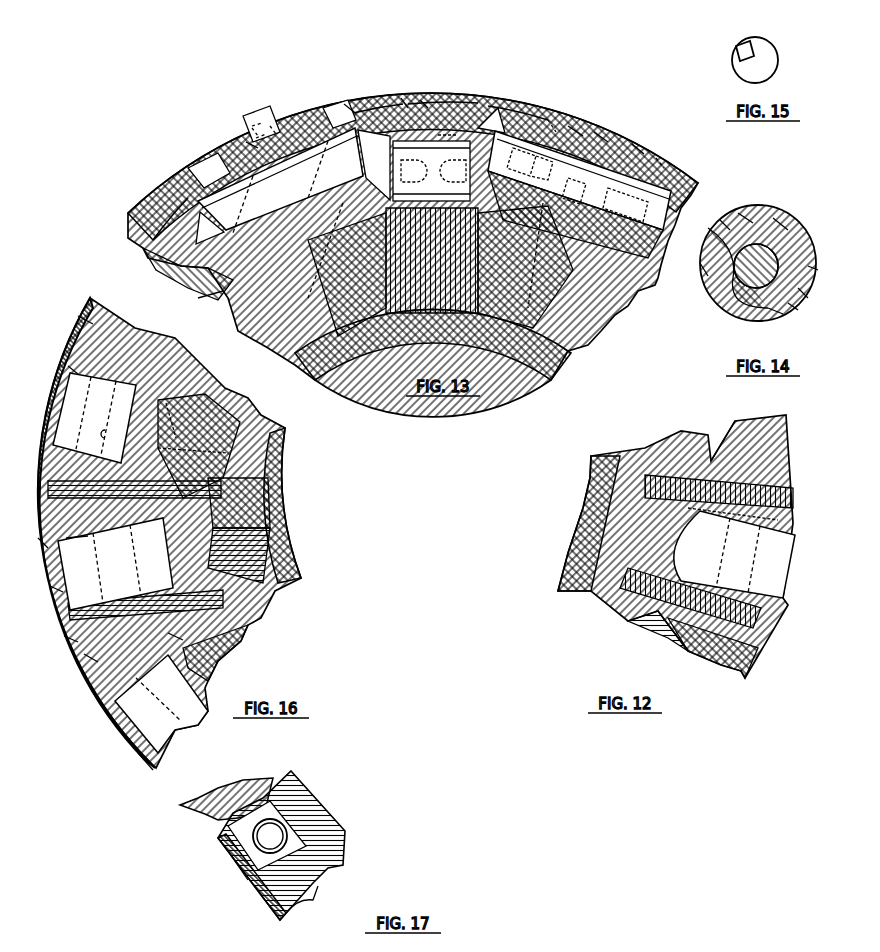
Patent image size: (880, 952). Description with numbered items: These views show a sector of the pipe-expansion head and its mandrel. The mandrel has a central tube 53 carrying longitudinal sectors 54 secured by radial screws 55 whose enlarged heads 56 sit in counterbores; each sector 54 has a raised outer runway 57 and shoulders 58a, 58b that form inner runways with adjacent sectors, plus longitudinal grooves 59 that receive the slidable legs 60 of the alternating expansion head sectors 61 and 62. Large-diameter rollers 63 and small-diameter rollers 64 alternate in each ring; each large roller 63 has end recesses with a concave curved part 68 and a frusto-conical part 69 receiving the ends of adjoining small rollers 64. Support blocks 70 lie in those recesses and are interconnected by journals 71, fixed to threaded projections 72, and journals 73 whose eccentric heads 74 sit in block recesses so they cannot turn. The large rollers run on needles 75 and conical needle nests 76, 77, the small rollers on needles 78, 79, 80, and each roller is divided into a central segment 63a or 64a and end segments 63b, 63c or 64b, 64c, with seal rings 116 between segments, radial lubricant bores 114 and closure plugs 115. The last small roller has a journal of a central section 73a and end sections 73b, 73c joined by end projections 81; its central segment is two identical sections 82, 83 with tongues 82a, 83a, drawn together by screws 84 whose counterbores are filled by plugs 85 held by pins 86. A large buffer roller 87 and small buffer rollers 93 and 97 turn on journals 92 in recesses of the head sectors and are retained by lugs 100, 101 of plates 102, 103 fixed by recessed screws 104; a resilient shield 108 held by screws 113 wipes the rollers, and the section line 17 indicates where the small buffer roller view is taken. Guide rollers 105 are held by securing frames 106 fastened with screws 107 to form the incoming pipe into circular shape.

In FIG. 16, the section line 17 is at (72, 706).
In FIG. 13, the central tube 53 is at (400, 325).
In FIG. 16, the central tube 53 is at (268, 495).
In FIG. 12, the central tube 53 is at (580, 505).
In FIG. 13, the longitudinal sector 54 is at (382, 288).
In FIG. 16, the longitudinal sector 54 is at (268, 468).
In FIG. 12, the longitudinal sector 54 is at (637, 445).
In FIG. 16, the radial screw 55 is at (220, 425).
In FIG. 13, the enlarged head 56 is at (528, 262).
In FIG. 16, the enlarged head 56 is at (180, 420).
In FIG. 16, the outer runway 57 is at (160, 448).
In FIG. 16, the shoulder 58a is at (202, 550).
In FIG. 16, the shoulder 58b is at (202, 512).
In FIG. 13, the longitudinal groove 59 is at (386, 270).
In FIG. 13, the leg 60 is at (364, 268).
In FIG. 16, the leg 60 is at (243, 612).
In FIG. 16, the expansion head sector 61 is at (60, 632).
In FIG. 12, the expansion head sector 61 is at (733, 422).
In FIG. 16, the expansion head sector 62 is at (42, 460).
In FIG. 12, the expansion head sector 62 is at (668, 620).
In FIG. 17, the expansion head sector 62 is at (314, 807).
In FIG. 13, the large-diameter roller 63 is at (468, 57).
In FIG. 13, the central segment 63a is at (458, 87).
In FIG. 13, the end segment 63b is at (505, 100).
In FIG. 13, the end segment 63c is at (368, 90).
In FIG. 13, the small-diameter roller 64 is at (254, 89).
In FIG. 17, the small-diameter roller 64 is at (258, 770).
In FIG. 13, the central segment 64a is at (245, 135).
In FIG. 13, the end segment 64b is at (322, 110).
In FIG. 13, the end segment 64c is at (205, 152).
In FIG. 13, the curved part 68 is at (340, 98).
In FIG. 13, the frusto-conical part 69 is at (398, 88).
In FIG. 13, the support block 70 is at (203, 252).
In FIG. 13, the journal 71 is at (212, 283).
In FIG. 13, the threaded projection 72 is at (410, 178).
In FIG. 13, the journal 73 is at (268, 195).
In FIG. 13, the central journal section 73a is at (564, 175).
In FIG. 14, the central journal section 73a is at (800, 230).
In FIG. 13, the end journal section 73b is at (614, 204).
In FIG. 15, the end journal section 73b is at (768, 40).
In FIG. 13, the end journal section 73c is at (500, 160).
In FIG. 13, the eccentric head 74 is at (358, 150).
In FIG. 14, the eccentric head 74 is at (724, 306).
In FIG. 13, the roller needles 75 is at (440, 131).
In FIG. 13, the frusto-conical needle nest 76 is at (478, 98).
In FIG. 13, the frusto-conical needle nest 77 is at (418, 90).
In FIG. 13, the roller needles 78 is at (302, 145).
In FIG. 13, the roller needles 79 is at (318, 134).
In FIG. 13, the roller needles 80 is at (205, 188).
In FIG. 13, the end projection 81 is at (566, 195).
In FIG. 15, the end projection 81 is at (728, 45).
In FIG. 13, the roller section 82 is at (541, 223).
In FIG. 14, the roller section 82 is at (702, 300).
In FIG. 14, the longitudinal tongue 82a is at (797, 285).
In FIG. 13, the roller section 83 is at (590, 125).
In FIG. 14, the roller section 83 is at (770, 210).
In FIG. 14, the longitudinal tongue 83a is at (690, 260).
In FIG. 13, the screw 84 is at (565, 118).
In FIG. 14, the screw 84 is at (718, 214).
In FIG. 13, the plug 85 is at (628, 135).
In FIG. 14, the plug 85 is at (736, 200).
In FIG. 14, the pin 86 is at (785, 300).
In FIG. 16, the large-diameter buffer roller 87 is at (95, 566).
In FIG. 16, the journal 92 is at (98, 430).
In FIG. 17, the journal 92 is at (252, 836).
In FIG. 16, the buffer roller 93 is at (73, 405).
In FIG. 17, the buffer roller 93 is at (228, 850).
In FIG. 17, the small buffer roller 97 is at (290, 895).
In FIG. 16, the lug 100 is at (82, 532).
In FIG. 16, the lug 101 is at (65, 362).
In FIG. 17, the lug 101 is at (210, 822).
In FIG. 16, the plate 102 is at (45, 580).
In FIG. 16, the plate 103 is at (38, 404).
In FIG. 16, the recessed screw 104 is at (70, 310).
In FIG. 12, the guide roller 105 is at (780, 580).
In FIG. 12, the securing frame 106 is at (788, 505).
In FIG. 12, the screw 107 is at (788, 490).
In FIG. 16, the resilient shield 108 is at (140, 757).
In FIG. 17, the resilient shield 108 is at (242, 880).
In FIG. 16, the screw 113 is at (33, 533).
In FIG. 13, the radial bore 114 is at (268, 120).
In FIG. 13, the closure plug 115 is at (248, 118).
In FIG. 13, the seal ring 116 is at (545, 112).